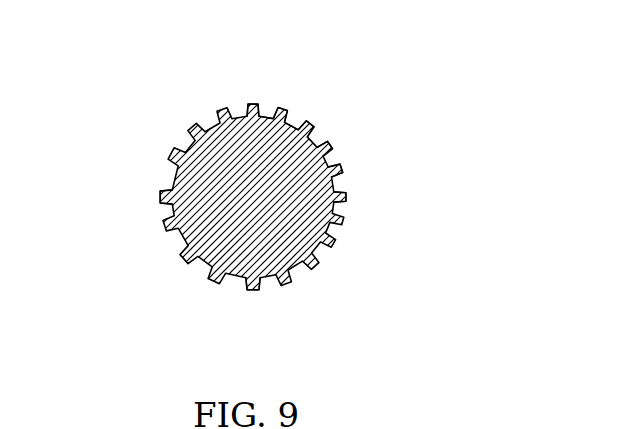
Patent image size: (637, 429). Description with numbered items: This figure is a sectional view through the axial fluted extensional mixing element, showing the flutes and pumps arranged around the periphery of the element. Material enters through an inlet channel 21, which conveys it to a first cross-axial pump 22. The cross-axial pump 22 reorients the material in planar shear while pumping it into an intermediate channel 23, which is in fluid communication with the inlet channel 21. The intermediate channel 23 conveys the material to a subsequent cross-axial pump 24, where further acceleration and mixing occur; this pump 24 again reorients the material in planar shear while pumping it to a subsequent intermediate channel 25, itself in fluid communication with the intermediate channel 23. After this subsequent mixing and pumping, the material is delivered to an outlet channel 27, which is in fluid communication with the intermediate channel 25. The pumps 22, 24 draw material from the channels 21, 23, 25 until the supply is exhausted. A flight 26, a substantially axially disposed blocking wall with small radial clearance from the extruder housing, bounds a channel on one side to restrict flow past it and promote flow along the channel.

The inlet channel 21 is at (337, 180).
The first cross-axial pump 22 is at (338, 167).
The intermediate channel 23 is at (334, 149).
The subsequent cross-axial pump 24 is at (288, 122).
The subsequent intermediate channel 25 is at (298, 125).
The flight 26 is at (254, 100).
The outlet channel 27 is at (268, 113).